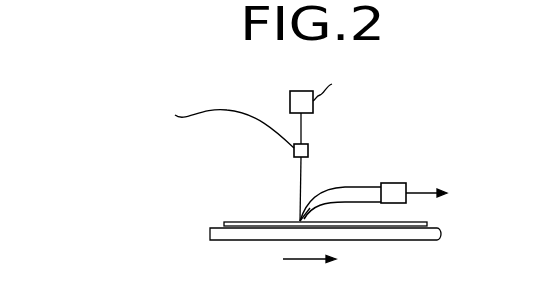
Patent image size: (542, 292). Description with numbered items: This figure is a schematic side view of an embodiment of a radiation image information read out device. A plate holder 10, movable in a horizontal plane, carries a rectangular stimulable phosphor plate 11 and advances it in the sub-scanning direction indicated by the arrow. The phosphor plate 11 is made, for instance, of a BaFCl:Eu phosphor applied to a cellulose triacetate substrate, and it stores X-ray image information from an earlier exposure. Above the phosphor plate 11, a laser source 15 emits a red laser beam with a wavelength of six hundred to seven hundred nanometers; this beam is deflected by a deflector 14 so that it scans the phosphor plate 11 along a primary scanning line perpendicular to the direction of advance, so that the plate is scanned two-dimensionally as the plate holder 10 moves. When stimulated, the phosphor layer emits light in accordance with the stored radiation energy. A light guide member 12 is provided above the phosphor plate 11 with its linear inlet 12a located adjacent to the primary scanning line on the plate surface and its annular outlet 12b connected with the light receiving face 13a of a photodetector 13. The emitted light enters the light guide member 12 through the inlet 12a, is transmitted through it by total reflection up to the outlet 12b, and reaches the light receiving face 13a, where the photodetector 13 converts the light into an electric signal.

The plate holder 10 is at (210, 234).
The stimulable phosphor plate 11 is at (233, 222).
The light guide member 12 is at (350, 186).
The linear inlet 12a is at (297, 221).
The annular outlet 12b is at (389, 184).
The photodetector 13 is at (402, 183).
The light receiving face 13a is at (382, 203).
The deflector 14 is at (294, 150).
The laser source 15 is at (290, 101).